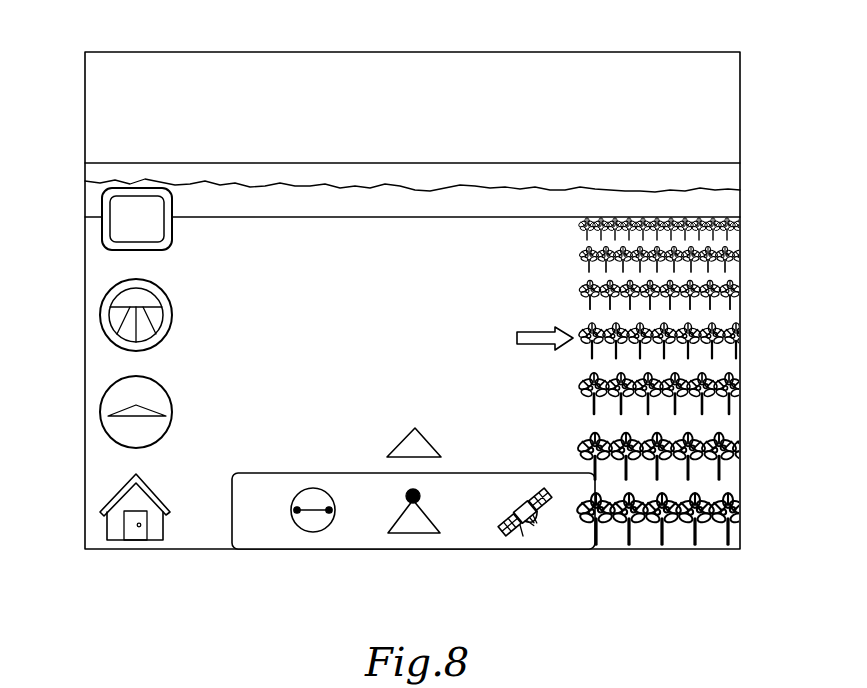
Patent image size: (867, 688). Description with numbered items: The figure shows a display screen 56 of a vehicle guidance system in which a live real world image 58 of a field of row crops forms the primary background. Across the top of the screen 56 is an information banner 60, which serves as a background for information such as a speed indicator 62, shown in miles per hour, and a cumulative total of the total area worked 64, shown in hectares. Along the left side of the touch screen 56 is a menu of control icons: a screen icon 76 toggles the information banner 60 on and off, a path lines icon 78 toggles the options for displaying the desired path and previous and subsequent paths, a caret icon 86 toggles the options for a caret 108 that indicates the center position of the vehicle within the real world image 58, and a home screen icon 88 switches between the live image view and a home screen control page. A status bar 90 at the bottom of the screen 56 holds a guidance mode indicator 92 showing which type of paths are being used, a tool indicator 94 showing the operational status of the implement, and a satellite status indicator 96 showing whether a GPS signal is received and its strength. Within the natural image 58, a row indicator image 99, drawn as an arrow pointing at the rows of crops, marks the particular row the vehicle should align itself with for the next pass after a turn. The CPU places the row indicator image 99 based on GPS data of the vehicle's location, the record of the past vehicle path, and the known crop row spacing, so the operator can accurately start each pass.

The display screen 56 is at (742, 268).
The real world image 58 is at (300, 245).
The information banner 60 is at (268, 72).
The speed indicator 62 is at (101, 86).
The total area worked 64 is at (717, 84).
The screen icon 76 is at (101, 212).
The path lines icon 78 is at (103, 320).
The caret icon 86 is at (103, 412).
The home screen icon 88 is at (108, 525).
The status bar 90 is at (358, 540).
The guidance mode indicator 92 is at (306, 490).
The tool indicator 94 is at (430, 533).
The satellite status indicator 96 is at (527, 535).
The row indicator image 99 is at (538, 335).
The caret 108 is at (413, 440).